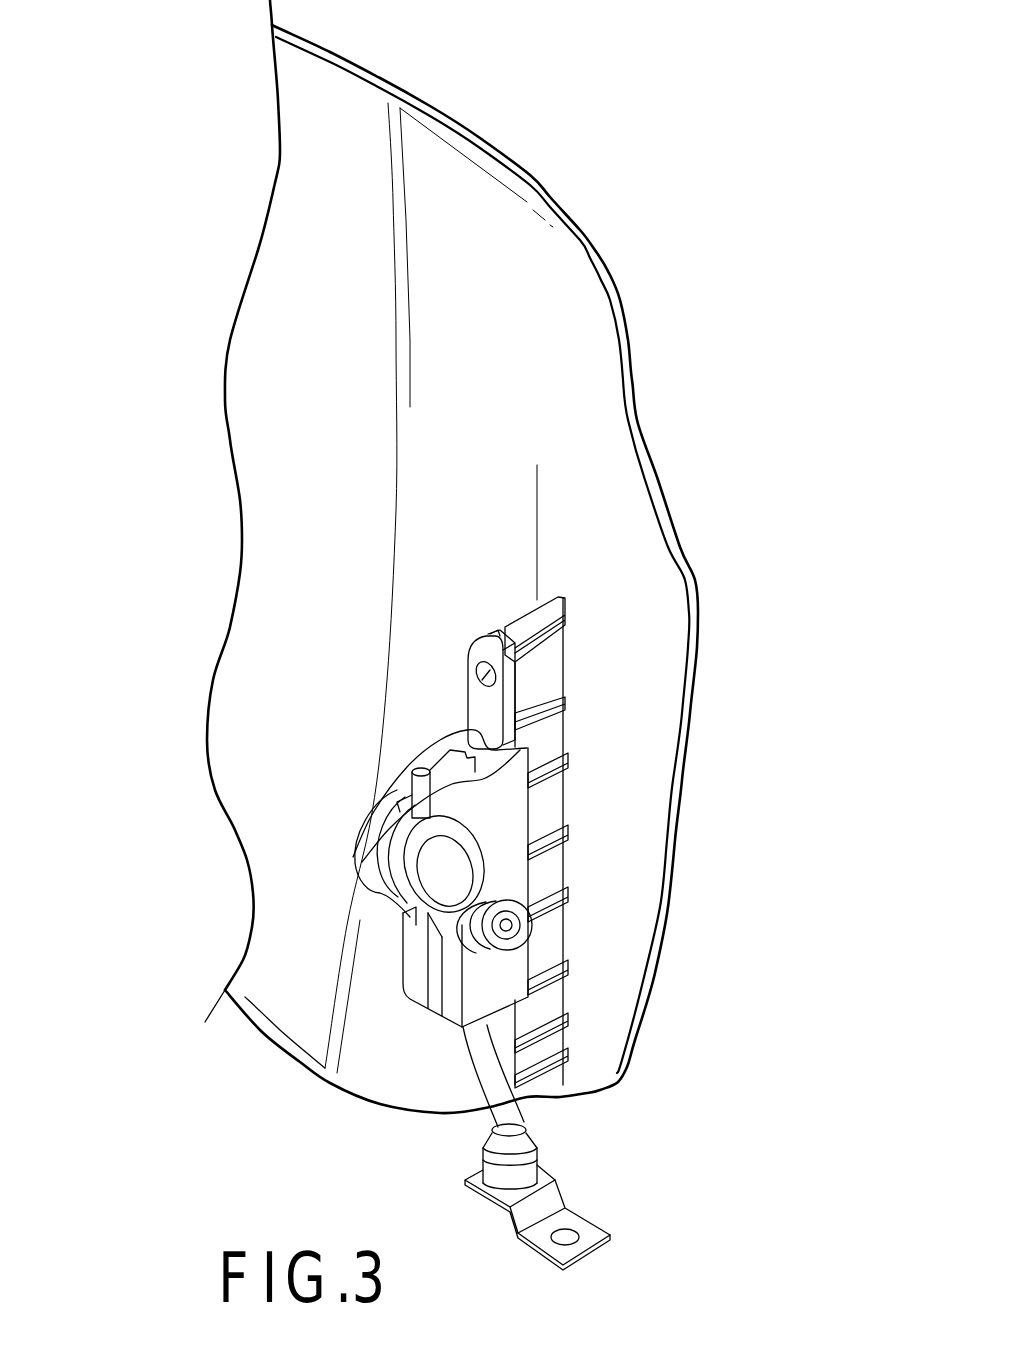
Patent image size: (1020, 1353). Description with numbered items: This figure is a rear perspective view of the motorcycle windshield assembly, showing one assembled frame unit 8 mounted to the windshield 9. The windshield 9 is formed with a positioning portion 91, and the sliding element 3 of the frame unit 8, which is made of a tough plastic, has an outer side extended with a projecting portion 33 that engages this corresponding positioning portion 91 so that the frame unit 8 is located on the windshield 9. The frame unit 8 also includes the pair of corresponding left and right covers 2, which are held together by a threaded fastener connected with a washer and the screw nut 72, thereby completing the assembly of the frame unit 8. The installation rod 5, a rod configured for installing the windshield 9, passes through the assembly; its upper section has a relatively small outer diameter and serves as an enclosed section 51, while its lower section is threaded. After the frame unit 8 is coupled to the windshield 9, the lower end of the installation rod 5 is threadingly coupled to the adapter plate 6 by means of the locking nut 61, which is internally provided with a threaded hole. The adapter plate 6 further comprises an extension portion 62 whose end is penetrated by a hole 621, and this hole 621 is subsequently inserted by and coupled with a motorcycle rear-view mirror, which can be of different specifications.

The windshield 9 is at (577, 287).
The positioning portion 91 is at (548, 640).
The frame unit 8 is at (293, 910).
The left and right covers 2 is at (507, 820).
The sliding element 3 is at (475, 697).
The projecting portion 33 is at (497, 635).
The enclosed section 51 is at (418, 795).
The installation rod 5 is at (482, 1057).
The screw nut 72 is at (493, 947).
The adapter plate 6 is at (616, 1201).
The locking nut 61 is at (527, 1163).
The extension portion 62 is at (552, 1198).
The hole 621 is at (565, 1238).